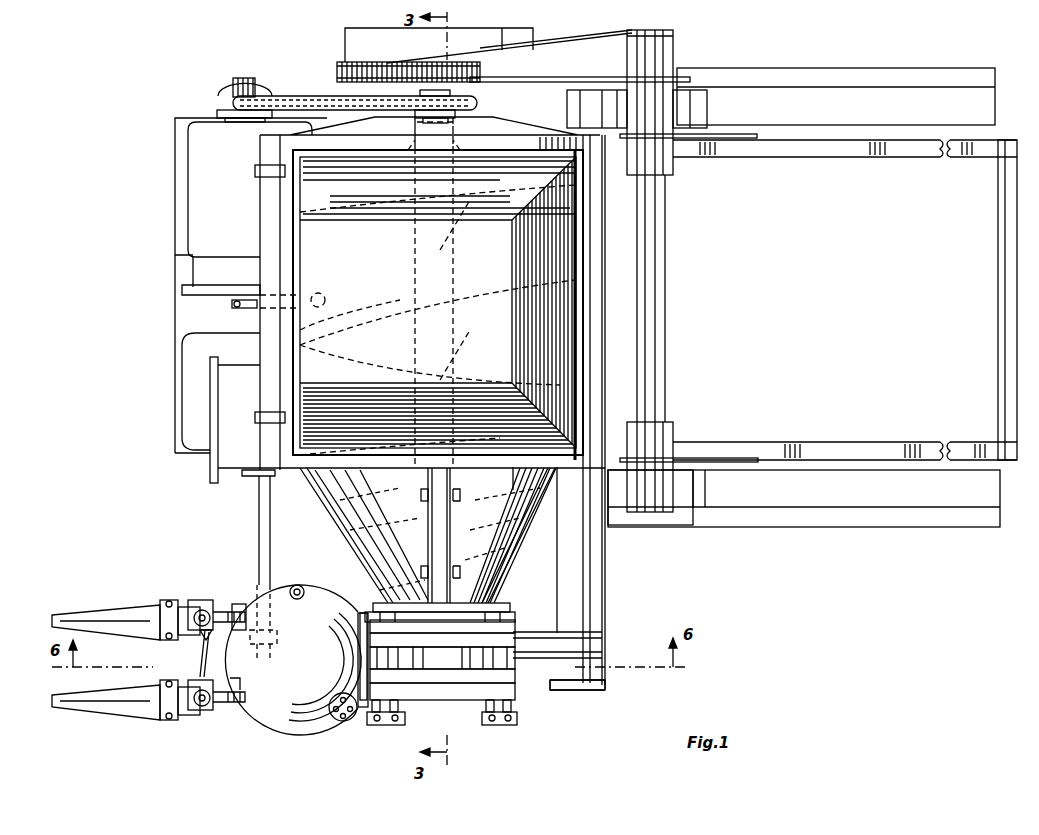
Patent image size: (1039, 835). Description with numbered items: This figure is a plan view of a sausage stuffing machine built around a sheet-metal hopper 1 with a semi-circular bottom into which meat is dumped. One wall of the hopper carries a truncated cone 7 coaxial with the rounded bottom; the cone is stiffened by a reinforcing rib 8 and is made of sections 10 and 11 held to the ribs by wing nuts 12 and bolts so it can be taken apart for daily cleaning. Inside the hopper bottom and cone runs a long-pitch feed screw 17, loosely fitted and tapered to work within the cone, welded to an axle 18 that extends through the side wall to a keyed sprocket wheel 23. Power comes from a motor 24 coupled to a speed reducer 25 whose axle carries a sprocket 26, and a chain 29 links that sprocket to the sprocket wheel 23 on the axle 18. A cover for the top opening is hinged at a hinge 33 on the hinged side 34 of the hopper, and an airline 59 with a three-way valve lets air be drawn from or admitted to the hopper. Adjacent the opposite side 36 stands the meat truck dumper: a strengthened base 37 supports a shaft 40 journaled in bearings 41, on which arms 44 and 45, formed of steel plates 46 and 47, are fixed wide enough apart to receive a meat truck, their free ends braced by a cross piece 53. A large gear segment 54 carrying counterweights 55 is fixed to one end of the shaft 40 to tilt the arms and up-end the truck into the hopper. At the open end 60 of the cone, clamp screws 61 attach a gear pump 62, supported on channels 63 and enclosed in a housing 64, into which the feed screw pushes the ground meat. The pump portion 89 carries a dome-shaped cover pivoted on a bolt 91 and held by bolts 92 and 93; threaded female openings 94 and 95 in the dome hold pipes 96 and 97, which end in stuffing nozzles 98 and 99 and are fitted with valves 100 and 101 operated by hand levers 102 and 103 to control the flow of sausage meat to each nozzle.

The hopper 1 is at (560, 367).
The truncated cone 7 is at (333, 500).
The reinforcing rib 8 is at (450, 538).
The cone section 10 is at (518, 545).
The cone section 11 is at (355, 538).
The wing nut 12 is at (462, 577).
The feed screw 17 is at (400, 310).
The axle 18 is at (415, 266).
The sprocket wheel 23 is at (495, 108).
The motor 24 is at (195, 405).
The speed reducer 25 is at (192, 152).
The sprocket 26 is at (228, 88).
The chain 29 is at (322, 96).
The hinge 33 is at (262, 422).
The hinged side 34 is at (305, 200).
The side 36 is at (608, 222).
The base 37 is at (815, 520).
The shaft 40 is at (660, 262).
The bearing 41 is at (665, 495).
The arm 44 is at (825, 447).
The arm 45 is at (818, 154).
The steel plate 46 is at (738, 135).
The steel plate 47 is at (740, 460).
The cross piece 53 is at (1005, 252).
The gear segment 54 is at (350, 66).
The counterweight 55 is at (363, 36).
The airline 59 is at (233, 312).
The open end 60 is at (500, 596).
The clamp screw 61 is at (513, 722).
The gear pump 62 is at (447, 660).
The channel 63 is at (552, 688).
The housing 64 is at (428, 680).
The pump outlet 89 is at (300, 730).
The bolt 91 is at (340, 700).
The bolt 92 is at (296, 599).
The bolt 93 is at (205, 665).
The threaded female opening 94 is at (240, 680).
The threaded female opening 95 is at (243, 600).
The pipe 96 is at (175, 712).
The pipe 97 is at (175, 605).
The stuffing nozzle 98 is at (92, 702).
The stuffing nozzle 99 is at (115, 612).
The valve 100 is at (200, 715).
The valve 101 is at (195, 605).
The hand lever 102 is at (222, 712).
The hand lever 103 is at (222, 605).